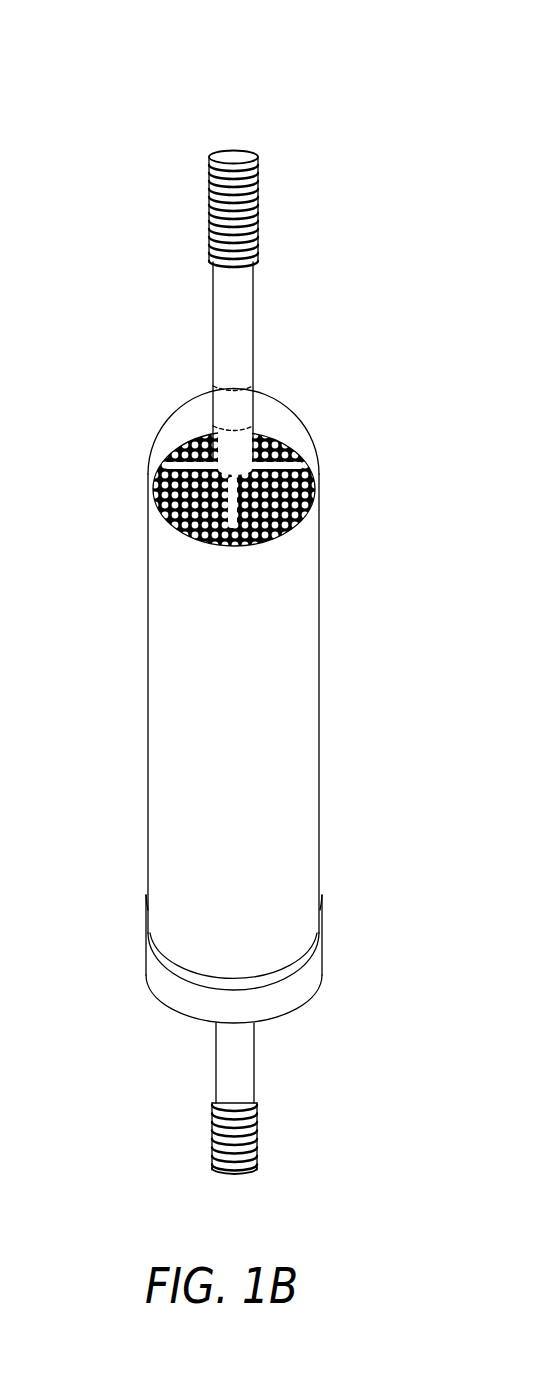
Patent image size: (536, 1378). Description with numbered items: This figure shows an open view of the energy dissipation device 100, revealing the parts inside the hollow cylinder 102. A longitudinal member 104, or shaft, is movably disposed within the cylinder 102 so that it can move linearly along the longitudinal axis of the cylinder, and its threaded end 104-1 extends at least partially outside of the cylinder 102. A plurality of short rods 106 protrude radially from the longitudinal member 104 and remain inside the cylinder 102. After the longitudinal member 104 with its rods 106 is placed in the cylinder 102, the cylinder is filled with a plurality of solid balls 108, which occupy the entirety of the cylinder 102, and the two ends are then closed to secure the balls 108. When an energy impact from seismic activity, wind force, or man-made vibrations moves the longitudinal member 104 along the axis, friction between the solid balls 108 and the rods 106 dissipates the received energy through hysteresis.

The energy dissipation device 100 is at (148, 63).
The hollow cylinder 102 is at (167, 648).
The longitudinal member 104 is at (230, 340).
The end of the longitudinal member 104-1 is at (237, 155).
The short rods 106 is at (253, 457).
The solid balls 108 is at (226, 500).